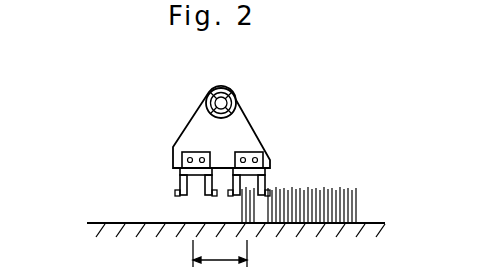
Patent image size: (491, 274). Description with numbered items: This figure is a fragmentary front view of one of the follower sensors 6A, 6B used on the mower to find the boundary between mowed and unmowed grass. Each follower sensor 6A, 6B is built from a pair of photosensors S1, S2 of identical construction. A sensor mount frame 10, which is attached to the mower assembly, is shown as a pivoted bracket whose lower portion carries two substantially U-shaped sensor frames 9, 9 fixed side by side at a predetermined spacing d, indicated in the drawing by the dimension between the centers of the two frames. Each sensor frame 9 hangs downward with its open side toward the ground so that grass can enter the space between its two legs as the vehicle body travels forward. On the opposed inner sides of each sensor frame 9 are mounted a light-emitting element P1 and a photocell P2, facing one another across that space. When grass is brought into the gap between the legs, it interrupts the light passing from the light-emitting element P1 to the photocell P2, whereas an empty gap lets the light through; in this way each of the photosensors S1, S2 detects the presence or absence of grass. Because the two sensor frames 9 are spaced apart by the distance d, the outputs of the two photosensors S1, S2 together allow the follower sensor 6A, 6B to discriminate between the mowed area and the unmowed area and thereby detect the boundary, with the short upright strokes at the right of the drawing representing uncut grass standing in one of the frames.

The follower sensor 6A is at (324, 86).
The follower sensor 6B is at (312, 109).
The sensor mount frame 10 is at (205, 92).
The sensor frame 9 is at (172, 176).
The light-emitting element P1 is at (214, 190).
The photocell P2 is at (175, 194).
The photosensor S1 is at (284, 160).
The photosensor S2 is at (148, 170).
The predetermined spacing d is at (220, 253).